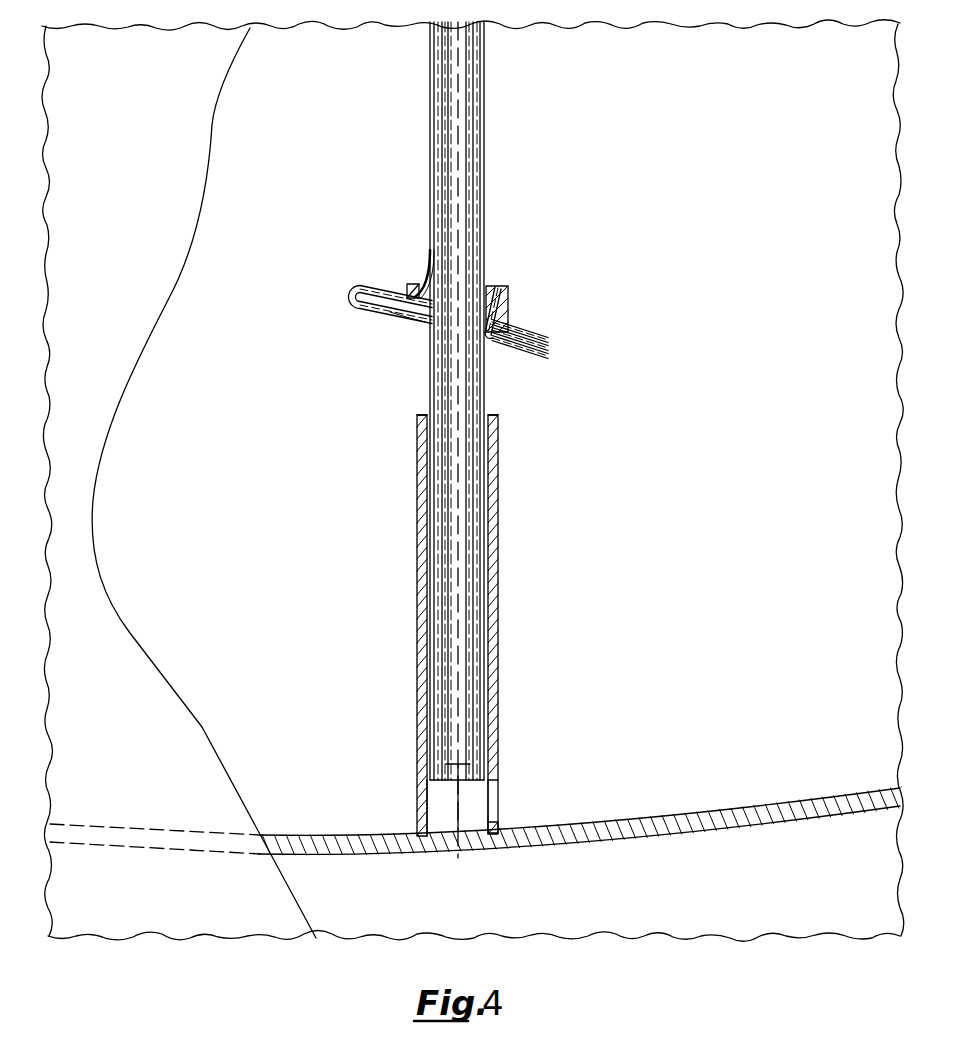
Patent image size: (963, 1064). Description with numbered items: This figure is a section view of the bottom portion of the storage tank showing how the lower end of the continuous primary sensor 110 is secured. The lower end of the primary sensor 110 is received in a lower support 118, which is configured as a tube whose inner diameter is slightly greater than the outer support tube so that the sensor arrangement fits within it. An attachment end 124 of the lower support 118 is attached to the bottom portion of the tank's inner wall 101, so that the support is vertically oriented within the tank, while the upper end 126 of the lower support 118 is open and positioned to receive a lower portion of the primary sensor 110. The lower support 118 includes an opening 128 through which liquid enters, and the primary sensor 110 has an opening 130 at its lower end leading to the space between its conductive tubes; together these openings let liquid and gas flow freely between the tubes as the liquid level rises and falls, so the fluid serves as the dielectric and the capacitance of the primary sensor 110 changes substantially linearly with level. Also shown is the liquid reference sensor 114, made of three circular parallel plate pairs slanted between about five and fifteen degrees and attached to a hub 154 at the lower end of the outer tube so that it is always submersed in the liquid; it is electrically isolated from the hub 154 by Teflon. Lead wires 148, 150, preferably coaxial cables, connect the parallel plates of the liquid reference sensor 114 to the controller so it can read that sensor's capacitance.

The inner wall 101 is at (298, 833).
The primary sensor 110 is at (490, 178).
The liquid reference sensor 114 is at (370, 304).
The lower support 118 is at (494, 620).
The attachment end 124 is at (414, 816).
The upper end 126 is at (414, 427).
The opening 128 is at (500, 810).
The opening 130 is at (430, 783).
The lead wire 148 is at (412, 292).
The lead wire 150 is at (410, 318).
The hub 154 is at (492, 290).